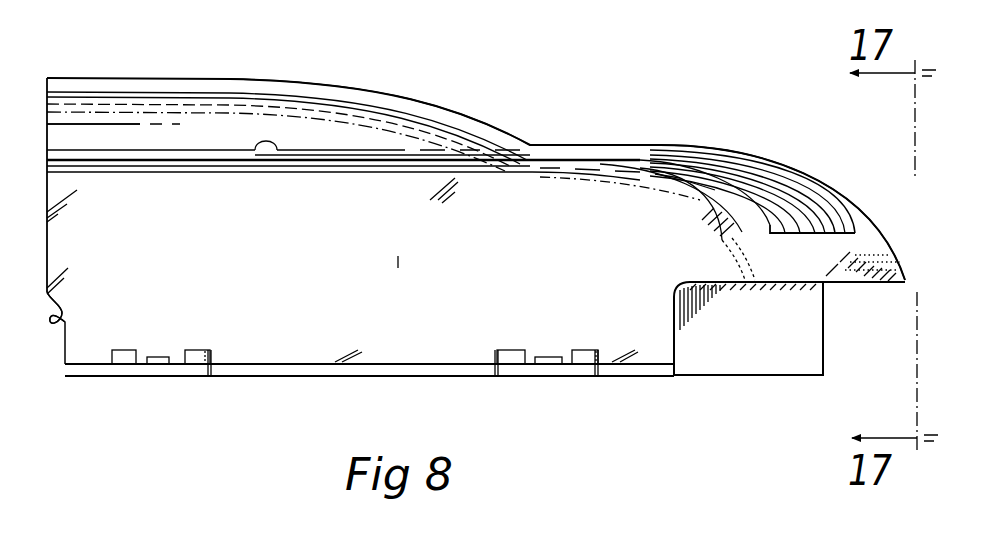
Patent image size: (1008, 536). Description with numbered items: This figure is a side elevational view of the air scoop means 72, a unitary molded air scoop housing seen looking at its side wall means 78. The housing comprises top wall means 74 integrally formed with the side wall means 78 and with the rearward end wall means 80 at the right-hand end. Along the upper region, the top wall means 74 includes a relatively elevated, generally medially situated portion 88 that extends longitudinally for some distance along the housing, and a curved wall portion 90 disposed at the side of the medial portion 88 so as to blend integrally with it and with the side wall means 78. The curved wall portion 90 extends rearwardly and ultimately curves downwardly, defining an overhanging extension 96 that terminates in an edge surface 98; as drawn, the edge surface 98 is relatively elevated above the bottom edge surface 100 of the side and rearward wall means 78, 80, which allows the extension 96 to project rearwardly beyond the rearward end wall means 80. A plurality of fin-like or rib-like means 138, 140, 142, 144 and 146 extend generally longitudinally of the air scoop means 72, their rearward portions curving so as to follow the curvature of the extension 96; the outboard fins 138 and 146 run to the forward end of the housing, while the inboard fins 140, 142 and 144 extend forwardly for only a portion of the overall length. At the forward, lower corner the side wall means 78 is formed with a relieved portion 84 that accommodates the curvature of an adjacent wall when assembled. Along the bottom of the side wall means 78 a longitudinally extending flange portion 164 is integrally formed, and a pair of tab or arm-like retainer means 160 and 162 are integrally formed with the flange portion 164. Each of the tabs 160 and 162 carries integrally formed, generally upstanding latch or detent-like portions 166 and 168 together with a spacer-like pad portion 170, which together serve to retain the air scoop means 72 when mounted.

The air scoop means 72 is at (584, 92).
The top wall means 74 is at (446, 158).
The side wall means 78 is at (402, 262).
The rearward end wall means 80 is at (800, 330).
The relieved portion 84 is at (65, 322).
The medial portion 88 is at (140, 124).
The curved wall portion 90 is at (262, 151).
The overhanging extension 96 is at (840, 250).
The edge surface 98 is at (784, 284).
The bottom edge surface 100 is at (742, 362).
The outboard fin 138 is at (845, 210).
The inboard fin 140 is at (810, 196).
The inboard fin 142 is at (826, 232).
The inboard fin 144 is at (742, 232).
The outboard fin 146 is at (345, 82).
The retainer tab 160 is at (212, 370).
The retainer tab 162 is at (497, 366).
The flange portion 164 is at (382, 368).
The latch portion 166 is at (127, 350).
The latch portion 168 is at (204, 352).
The spacer pad portion 170 is at (160, 357).